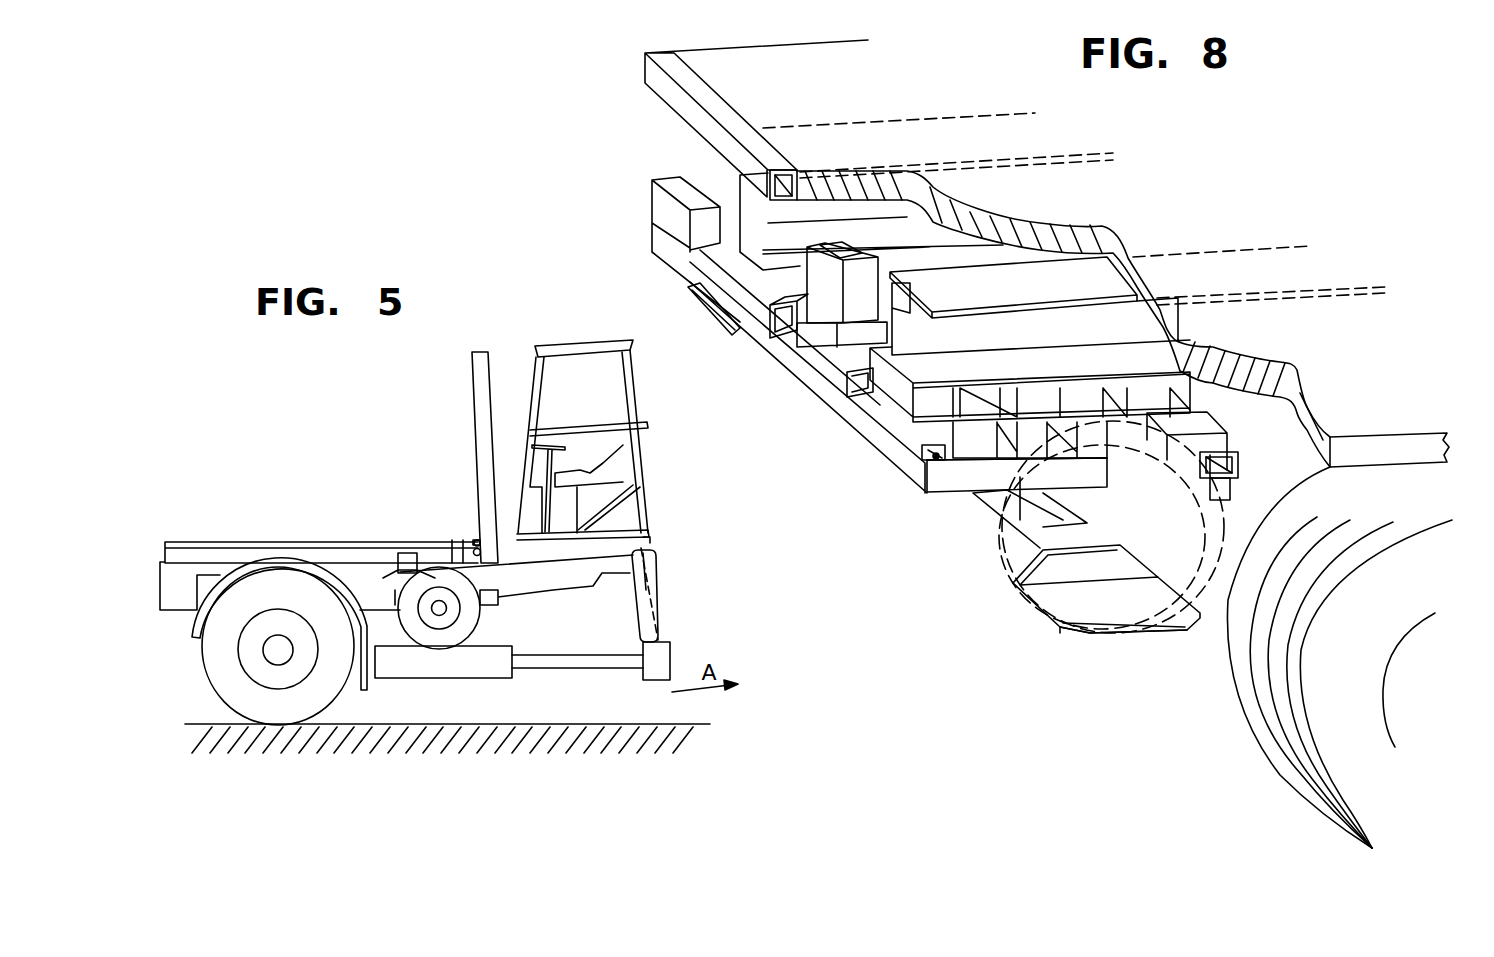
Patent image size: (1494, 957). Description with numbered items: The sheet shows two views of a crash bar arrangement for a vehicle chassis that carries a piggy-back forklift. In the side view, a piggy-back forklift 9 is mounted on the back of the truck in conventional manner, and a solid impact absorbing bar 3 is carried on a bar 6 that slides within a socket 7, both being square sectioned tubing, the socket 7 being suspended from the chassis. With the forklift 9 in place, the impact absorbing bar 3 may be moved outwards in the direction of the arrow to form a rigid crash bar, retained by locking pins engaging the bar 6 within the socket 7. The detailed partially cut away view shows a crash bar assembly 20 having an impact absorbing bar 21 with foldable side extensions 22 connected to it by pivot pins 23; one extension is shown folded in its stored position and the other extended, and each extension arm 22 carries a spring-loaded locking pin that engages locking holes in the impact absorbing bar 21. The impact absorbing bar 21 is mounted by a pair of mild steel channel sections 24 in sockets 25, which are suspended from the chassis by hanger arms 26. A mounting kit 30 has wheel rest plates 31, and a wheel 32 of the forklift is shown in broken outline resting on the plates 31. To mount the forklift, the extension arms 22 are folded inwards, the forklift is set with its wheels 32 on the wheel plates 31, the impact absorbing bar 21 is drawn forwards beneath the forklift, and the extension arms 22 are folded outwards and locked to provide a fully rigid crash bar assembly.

In FIG. 5, the impact absorbing bar 3 is at (663, 660).
In FIG. 5, the bar 6 is at (573, 662).
In FIG. 5, the socket 7 is at (455, 665).
In FIG. 5, the piggy-back forklift 9 is at (552, 333).
In FIG. 8, the crash bar assembly 20 is at (908, 540).
In FIG. 8, the impact absorbing bar 21 is at (798, 362).
In FIG. 8, the foldable side extensions 22 is at (1022, 477).
In FIG. 8, the pivot pins 23 is at (940, 460).
In FIG. 8, the mild steel channel sections 24 is at (787, 330).
In FIG. 8, the sockets 25 is at (852, 335).
In FIG. 8, the hanger arms 26 is at (838, 248).
In FIG. 8, the mounting kit 30 is at (1101, 650).
In FIG. 8, the wheel rest plates 31 is at (1100, 635).
In FIG. 8, the wheel 32 is at (1165, 610).